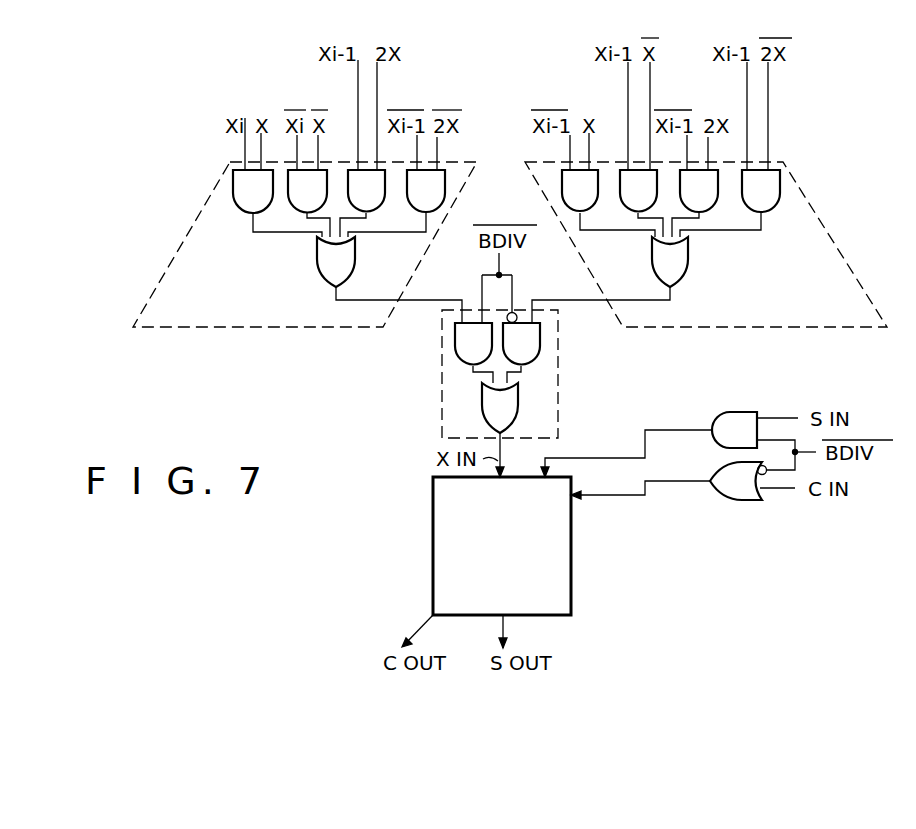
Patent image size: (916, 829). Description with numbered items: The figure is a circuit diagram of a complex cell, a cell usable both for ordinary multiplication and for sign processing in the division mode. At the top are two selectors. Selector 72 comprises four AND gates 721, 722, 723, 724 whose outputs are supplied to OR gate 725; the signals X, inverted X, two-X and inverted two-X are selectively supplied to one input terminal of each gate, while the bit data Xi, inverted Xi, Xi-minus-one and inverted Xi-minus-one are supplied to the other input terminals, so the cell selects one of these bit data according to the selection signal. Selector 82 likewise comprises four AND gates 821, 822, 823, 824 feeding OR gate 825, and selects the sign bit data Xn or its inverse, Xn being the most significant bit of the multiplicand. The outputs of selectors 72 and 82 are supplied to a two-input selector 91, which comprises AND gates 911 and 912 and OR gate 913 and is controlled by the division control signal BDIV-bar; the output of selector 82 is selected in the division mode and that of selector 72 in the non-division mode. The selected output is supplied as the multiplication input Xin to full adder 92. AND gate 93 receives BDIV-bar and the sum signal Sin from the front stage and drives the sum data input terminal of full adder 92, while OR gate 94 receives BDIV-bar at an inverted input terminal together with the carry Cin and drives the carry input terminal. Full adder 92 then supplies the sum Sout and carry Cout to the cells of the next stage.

The selector 72 is at (305, 244).
The AND gate 721 is at (437, 215).
The AND gate 722 is at (372, 215).
The AND gate 723 is at (298, 215).
The AND gate 724 is at (240, 215).
The OR gate 725 is at (318, 270).
The selector 82 is at (706, 244).
The AND gate 821 is at (769, 215).
The AND gate 822 is at (707, 215).
The AND gate 823 is at (631, 215).
The AND gate 824 is at (563, 215).
The OR gate 825 is at (686, 272).
The two-input selector 91 is at (495, 393).
The AND gate 911 is at (540, 350).
The AND gate 912 is at (455, 350).
The OR gate 913 is at (518, 407).
The full adder 92 is at (572, 549).
The AND gate 93 is at (733, 414).
The OR gate 94 is at (741, 500).